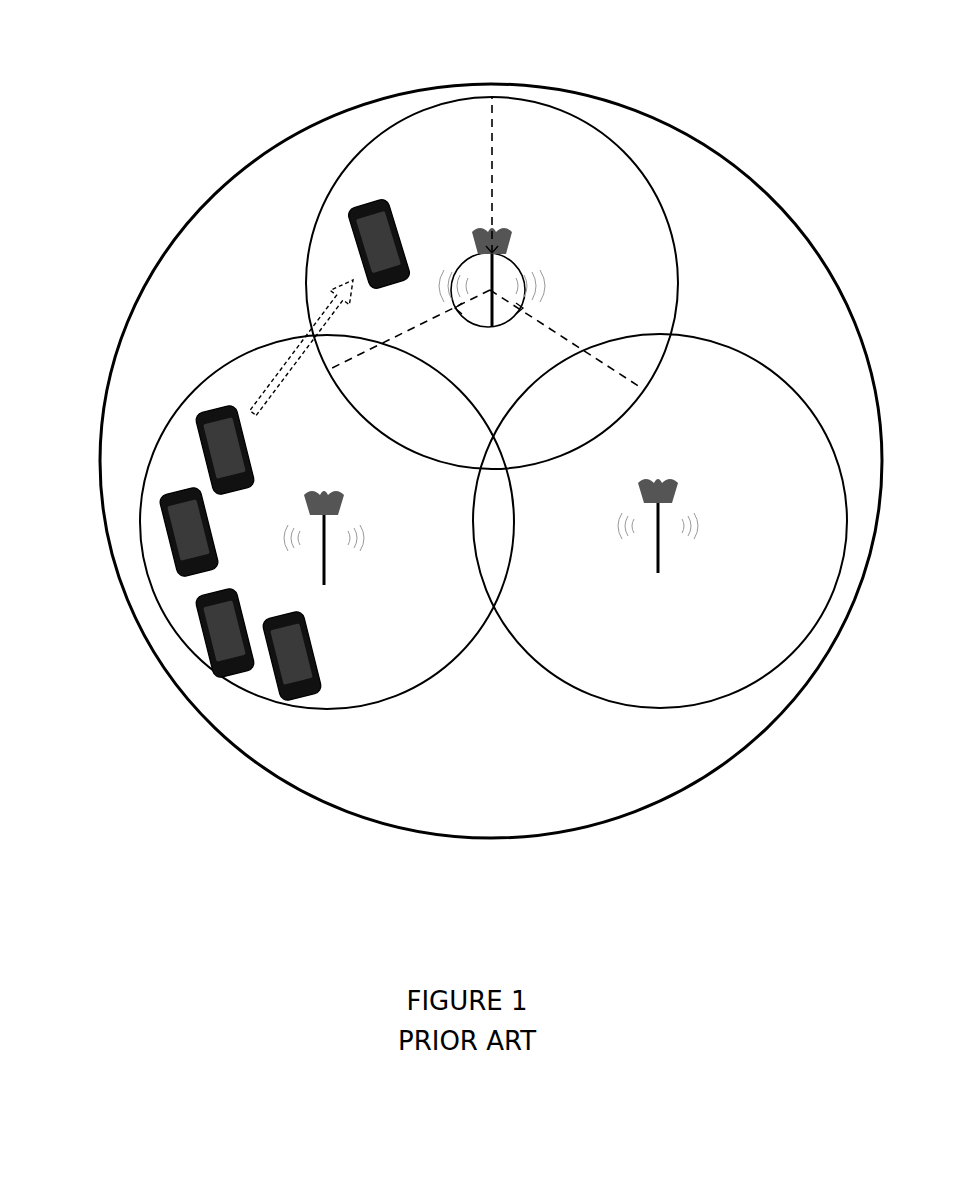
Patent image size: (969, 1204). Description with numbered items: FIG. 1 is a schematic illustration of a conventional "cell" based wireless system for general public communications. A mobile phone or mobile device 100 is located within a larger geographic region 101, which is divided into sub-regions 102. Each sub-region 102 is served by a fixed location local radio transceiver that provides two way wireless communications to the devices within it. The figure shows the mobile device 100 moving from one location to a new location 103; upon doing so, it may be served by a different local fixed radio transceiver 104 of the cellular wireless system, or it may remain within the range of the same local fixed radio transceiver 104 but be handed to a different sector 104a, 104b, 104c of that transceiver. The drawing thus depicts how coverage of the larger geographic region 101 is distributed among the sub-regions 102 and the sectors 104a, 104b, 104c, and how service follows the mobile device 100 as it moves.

The mobile device 100 is at (175, 487).
The larger geographic region 101 is at (263, 745).
The sub-region 102 is at (415, 682).
The new location 103 is at (348, 212).
The local fixed radio transceiver 104 is at (430, 108).
The sector 104a is at (522, 272).
The sector 104b is at (497, 330).
The sector 104c is at (465, 253).